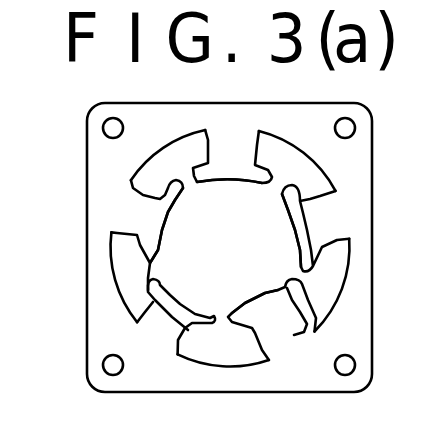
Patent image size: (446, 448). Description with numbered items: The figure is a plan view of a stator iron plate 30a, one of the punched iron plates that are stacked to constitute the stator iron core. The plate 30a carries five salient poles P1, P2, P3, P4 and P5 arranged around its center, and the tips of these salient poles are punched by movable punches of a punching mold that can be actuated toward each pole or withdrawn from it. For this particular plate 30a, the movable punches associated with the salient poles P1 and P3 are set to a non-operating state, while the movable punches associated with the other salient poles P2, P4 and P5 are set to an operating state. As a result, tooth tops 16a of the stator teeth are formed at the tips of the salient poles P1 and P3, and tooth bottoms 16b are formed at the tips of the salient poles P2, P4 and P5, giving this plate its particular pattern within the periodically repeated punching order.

The stator iron plate 30a is at (352, 292).
The salient pole P1 is at (233, 150).
The salient pole P2 is at (325, 217).
The salient pole P3 is at (279, 336).
The salient pole P4 is at (162, 325).
The salient pole P5 is at (133, 208).
The tooth tops 16a is at (275, 292).
The tooth bottoms 16b is at (297, 235).